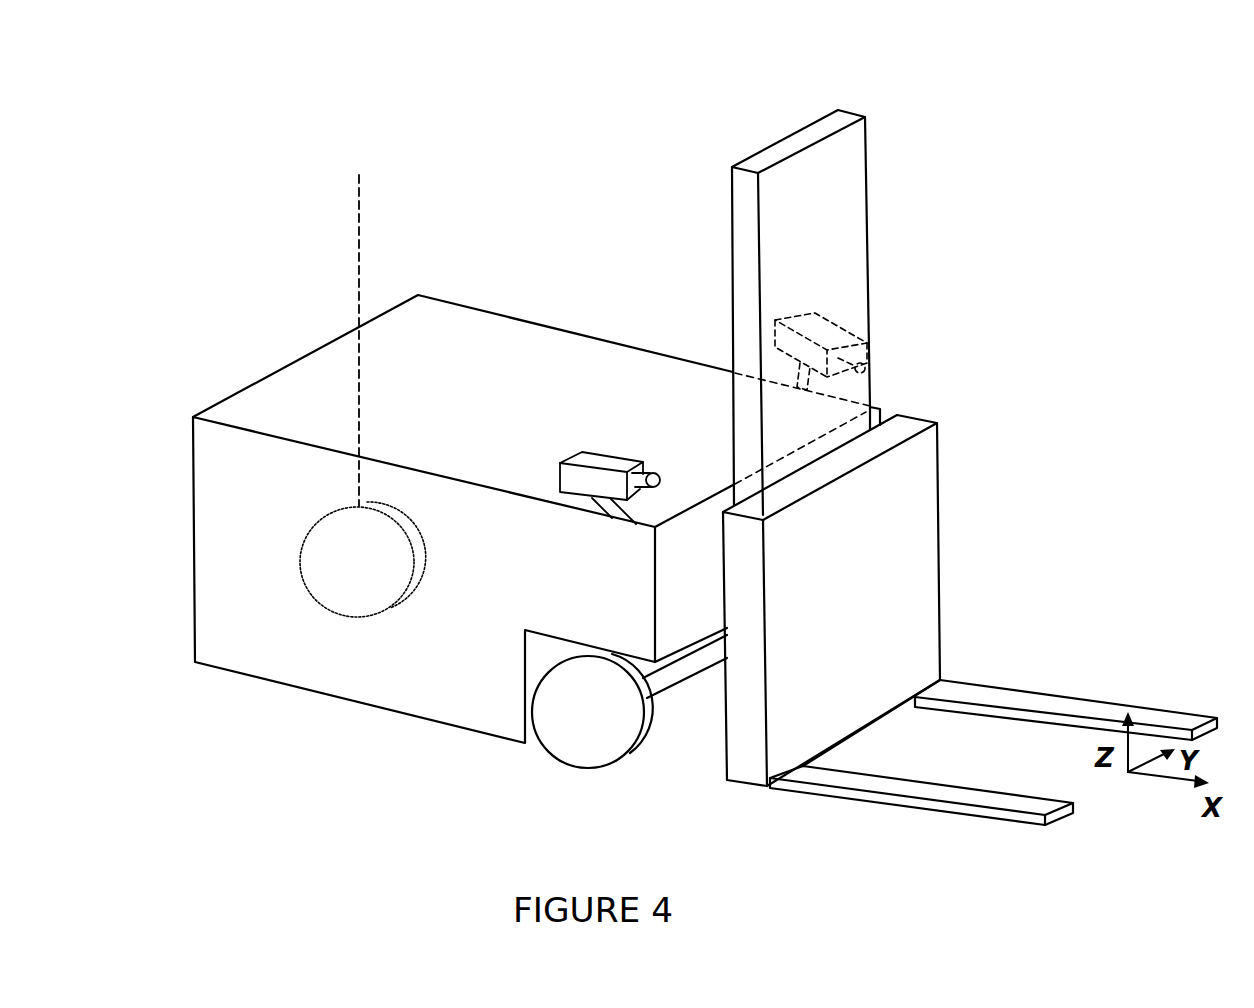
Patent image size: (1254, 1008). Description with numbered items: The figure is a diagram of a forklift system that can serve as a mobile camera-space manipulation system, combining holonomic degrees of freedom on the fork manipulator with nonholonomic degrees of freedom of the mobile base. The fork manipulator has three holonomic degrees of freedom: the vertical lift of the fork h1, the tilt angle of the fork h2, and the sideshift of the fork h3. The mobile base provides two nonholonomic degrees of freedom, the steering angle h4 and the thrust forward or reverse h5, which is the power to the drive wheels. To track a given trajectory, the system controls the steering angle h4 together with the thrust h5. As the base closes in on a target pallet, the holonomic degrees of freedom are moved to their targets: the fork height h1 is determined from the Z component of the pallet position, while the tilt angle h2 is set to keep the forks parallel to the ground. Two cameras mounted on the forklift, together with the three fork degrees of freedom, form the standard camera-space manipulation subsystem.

The vertical lift of the fork h1 is at (857, 722).
The tilt angle of the fork h2 is at (792, 128).
The sideshift of the fork h3 is at (743, 782).
The steering angle h4 is at (339, 205).
The thrust forward or reverse h5 is at (721, 688).